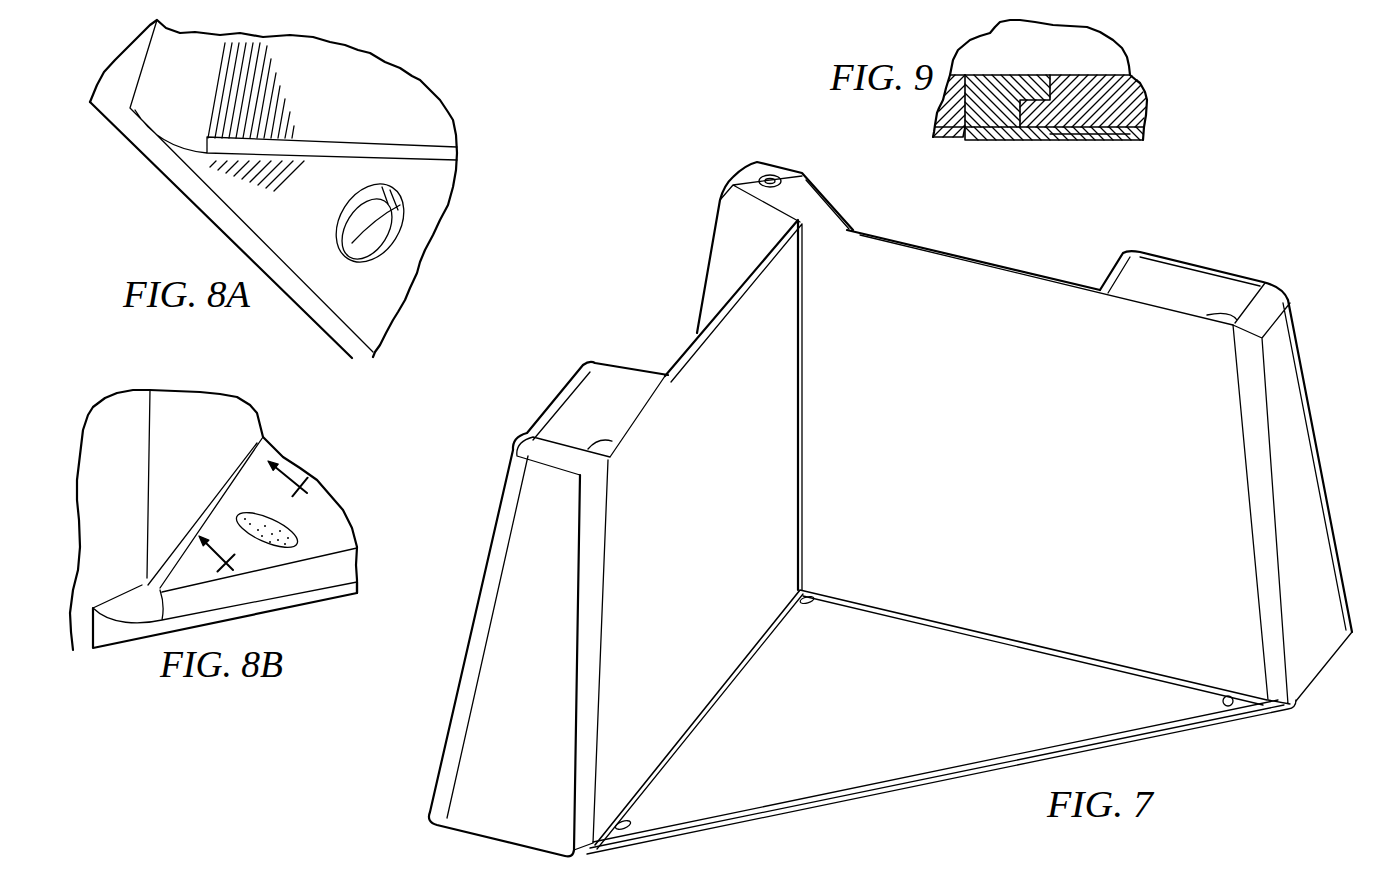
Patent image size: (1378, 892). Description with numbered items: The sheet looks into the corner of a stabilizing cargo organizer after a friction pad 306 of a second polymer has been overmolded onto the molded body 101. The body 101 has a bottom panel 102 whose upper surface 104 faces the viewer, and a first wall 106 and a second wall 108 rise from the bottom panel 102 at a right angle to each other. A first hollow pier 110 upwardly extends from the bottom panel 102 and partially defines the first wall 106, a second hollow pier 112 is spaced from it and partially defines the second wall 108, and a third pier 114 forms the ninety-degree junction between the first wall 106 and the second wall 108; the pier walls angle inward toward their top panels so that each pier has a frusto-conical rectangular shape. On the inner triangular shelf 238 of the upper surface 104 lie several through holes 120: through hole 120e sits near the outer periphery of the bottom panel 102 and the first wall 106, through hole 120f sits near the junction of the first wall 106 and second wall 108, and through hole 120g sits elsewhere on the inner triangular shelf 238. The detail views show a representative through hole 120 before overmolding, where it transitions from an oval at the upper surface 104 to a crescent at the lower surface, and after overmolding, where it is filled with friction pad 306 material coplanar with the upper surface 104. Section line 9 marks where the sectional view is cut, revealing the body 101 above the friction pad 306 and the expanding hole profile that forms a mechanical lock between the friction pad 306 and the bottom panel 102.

In FIG. 7, the body 101 is at (477, 733).
In FIG. 9, the body 101 is at (1117, 103).
In FIG. 7, the bottom panel 102 is at (878, 757).
In FIG. 7, the upper surface 104 is at (937, 703).
In FIG. 8A, the upper surface 104 is at (430, 212).
In FIG. 8B, the upper surface 104 is at (340, 524).
In FIG. 9, the upper surface 104 is at (1115, 71).
In FIG. 7, the first wall 106 is at (709, 526).
In FIG. 7, the second wall 108 is at (1009, 453).
In FIG. 7, the first hollow pier 110 is at (527, 784).
In FIG. 7, the second hollow pier 112 is at (1331, 610).
In FIG. 7, the third pier 114 is at (723, 262).
In FIG. 8A, the through hole 120 is at (348, 221).
In FIG. 8B, the through hole 120 is at (236, 526).
In FIG. 9, the through hole 120 is at (977, 100).
In FIG. 7, the through hole 120e is at (630, 818).
In FIG. 7, the through hole 120f is at (807, 606).
In FIG. 7, the through hole 120g is at (1223, 697).
In FIG. 7, the inner triangular shelf 238 is at (812, 781).
In FIG. 9, the friction pad 306 is at (1117, 133).
In FIG. 8B, the section line 9- 9 is at (262, 530).